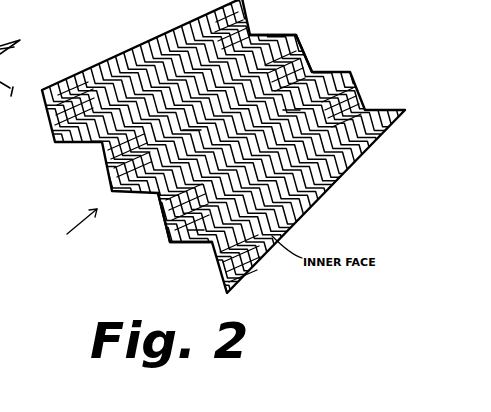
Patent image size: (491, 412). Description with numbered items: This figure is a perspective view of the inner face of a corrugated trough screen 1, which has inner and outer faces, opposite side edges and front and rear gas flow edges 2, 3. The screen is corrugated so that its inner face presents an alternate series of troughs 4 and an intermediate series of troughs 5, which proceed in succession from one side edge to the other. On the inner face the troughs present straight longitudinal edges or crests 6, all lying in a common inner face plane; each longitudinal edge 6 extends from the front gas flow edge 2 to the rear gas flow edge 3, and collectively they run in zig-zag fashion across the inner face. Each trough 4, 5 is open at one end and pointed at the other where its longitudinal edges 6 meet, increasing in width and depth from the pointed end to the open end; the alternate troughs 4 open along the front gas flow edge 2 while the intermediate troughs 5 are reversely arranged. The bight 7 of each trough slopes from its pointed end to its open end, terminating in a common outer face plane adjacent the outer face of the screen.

The trough screen 1 is at (133, 51).
The front gas flow edge 2 is at (167, 224).
The rear gas flow edge 3 is at (298, 44).
The alternate troughs 4 is at (185, 136).
The intermediate troughs 5 is at (283, 110).
The longitudinal edges or crests 6 is at (98, 133).
The bight 7 is at (190, 230).